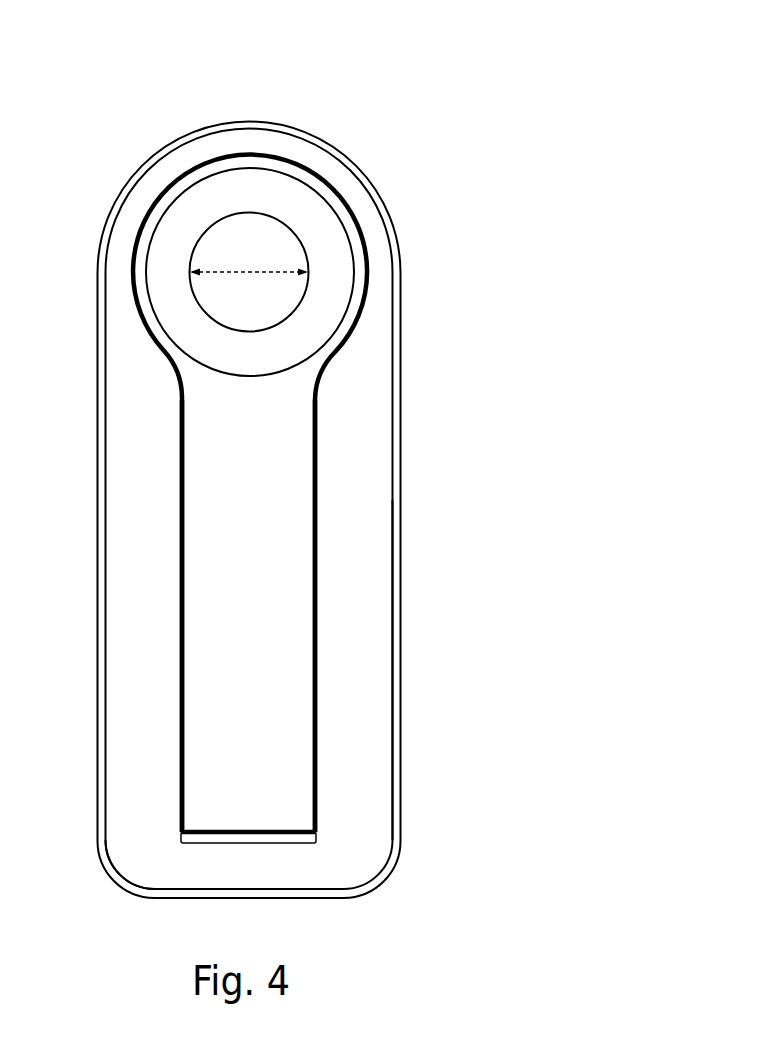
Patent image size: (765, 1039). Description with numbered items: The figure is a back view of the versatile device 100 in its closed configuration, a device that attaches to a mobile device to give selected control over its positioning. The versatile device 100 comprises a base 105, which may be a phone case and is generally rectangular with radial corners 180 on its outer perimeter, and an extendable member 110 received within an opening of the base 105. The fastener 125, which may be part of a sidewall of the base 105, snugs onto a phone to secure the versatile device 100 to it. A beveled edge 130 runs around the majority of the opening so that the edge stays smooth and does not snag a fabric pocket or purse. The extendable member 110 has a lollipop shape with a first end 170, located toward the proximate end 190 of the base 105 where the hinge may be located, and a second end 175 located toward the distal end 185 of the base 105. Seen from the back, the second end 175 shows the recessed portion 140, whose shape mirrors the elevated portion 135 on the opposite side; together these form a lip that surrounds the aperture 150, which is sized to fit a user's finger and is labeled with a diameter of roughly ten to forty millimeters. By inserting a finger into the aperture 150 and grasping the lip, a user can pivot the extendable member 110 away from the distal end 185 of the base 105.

The versatile device 100 is at (522, 72).
The base 105 is at (355, 583).
The extendable member 110 is at (290, 535).
The fastener 125 is at (365, 777).
The beveled edge 130 is at (393, 380).
The elevated portion 135 is at (304, 261).
The recessed portion 140 is at (192, 215).
The aperture 150 is at (220, 255).
The first end 170 is at (253, 760).
The second end 175 is at (318, 183).
The radial corners 180 is at (116, 865).
The distal end 185 is at (245, 128).
The proximate end 190 is at (320, 898).